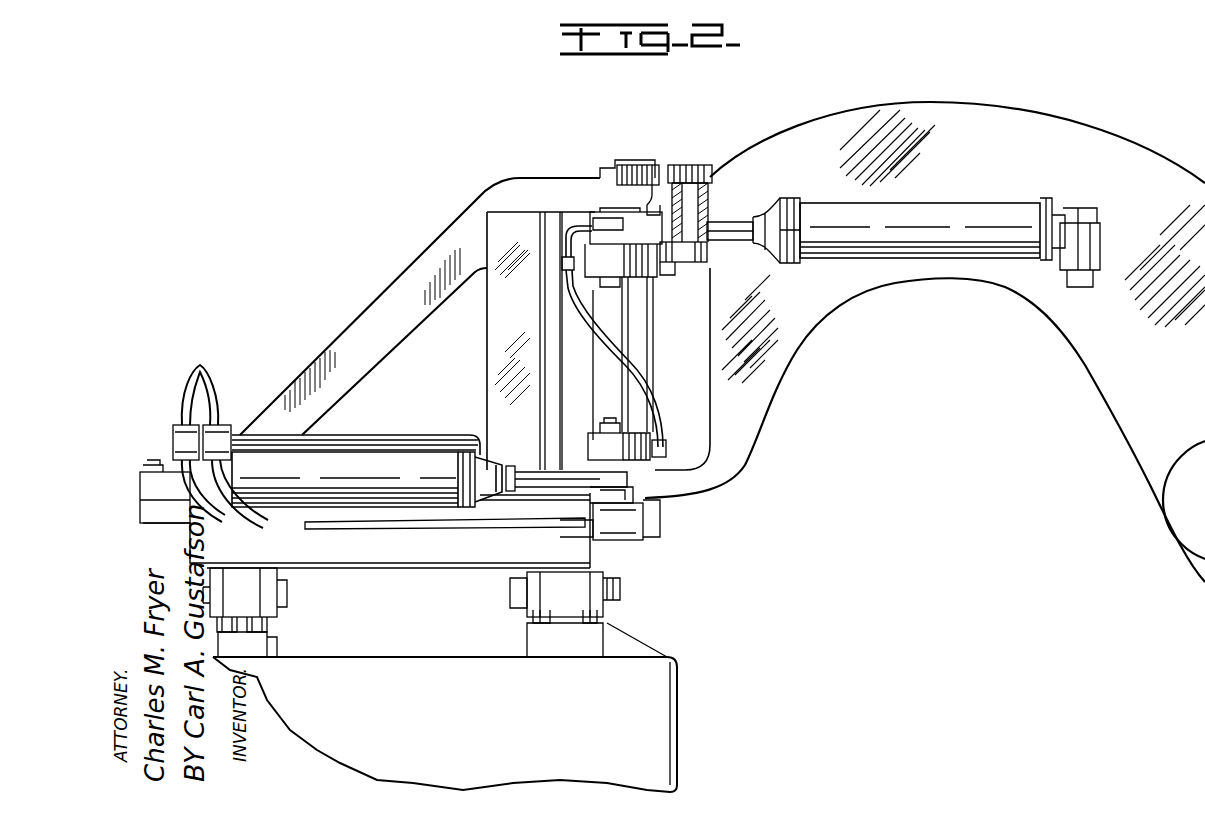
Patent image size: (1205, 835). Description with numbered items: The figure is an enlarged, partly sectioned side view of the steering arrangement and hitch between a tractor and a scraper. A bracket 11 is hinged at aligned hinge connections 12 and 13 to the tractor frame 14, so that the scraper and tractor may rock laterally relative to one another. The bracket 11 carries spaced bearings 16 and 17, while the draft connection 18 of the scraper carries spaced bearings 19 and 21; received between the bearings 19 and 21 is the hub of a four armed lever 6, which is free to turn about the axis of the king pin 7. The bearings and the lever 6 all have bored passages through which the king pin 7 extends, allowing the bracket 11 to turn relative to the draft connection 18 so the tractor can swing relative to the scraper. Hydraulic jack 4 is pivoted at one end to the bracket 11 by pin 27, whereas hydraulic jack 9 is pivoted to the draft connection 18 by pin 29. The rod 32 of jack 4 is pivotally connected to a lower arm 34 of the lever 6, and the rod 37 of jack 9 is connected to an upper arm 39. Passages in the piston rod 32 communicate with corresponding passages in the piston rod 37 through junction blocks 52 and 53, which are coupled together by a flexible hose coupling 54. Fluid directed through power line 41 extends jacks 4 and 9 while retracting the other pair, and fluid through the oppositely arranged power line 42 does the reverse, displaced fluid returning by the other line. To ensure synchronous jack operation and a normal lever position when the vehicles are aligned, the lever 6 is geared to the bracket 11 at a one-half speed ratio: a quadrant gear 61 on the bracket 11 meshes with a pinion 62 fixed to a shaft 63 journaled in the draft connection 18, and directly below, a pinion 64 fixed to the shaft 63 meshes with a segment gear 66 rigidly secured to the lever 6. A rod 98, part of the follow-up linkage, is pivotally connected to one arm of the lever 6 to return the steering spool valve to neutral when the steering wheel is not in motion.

The hydraulic jack 4 is at (390, 458).
The four armed lever 6 is at (633, 333).
The king pin 7 is at (617, 167).
The hydraulic jack 9 is at (968, 215).
The bracket 11 is at (447, 257).
The hinge connection 12 is at (283, 597).
The hinge connection 13 is at (619, 590).
The tractor frame 14 is at (475, 704).
The bearing 16 is at (647, 523).
The bearing 17 is at (602, 188).
The draft connection 18 is at (895, 266).
The bearing 19 is at (666, 482).
The bearing 21 is at (588, 216).
The pin 27 is at (150, 466).
The pin 29 is at (1068, 209).
The piston rod 32 is at (520, 474).
The lower arm 34 is at (598, 445).
The piston rod 37 is at (738, 237).
The upper arm 39 is at (610, 278).
The power line 41 is at (207, 501).
The power line 42 is at (252, 530).
The junction block 52 is at (667, 452).
The junction block 53 is at (558, 262).
The flexible hose coupling 54 is at (612, 356).
The quadrant gear 61 is at (655, 177).
The pinion 62 is at (690, 172).
The shaft 63 is at (702, 218).
The pinion 64 is at (704, 263).
The segment gear 66 is at (668, 264).
The rod 98 is at (508, 529).